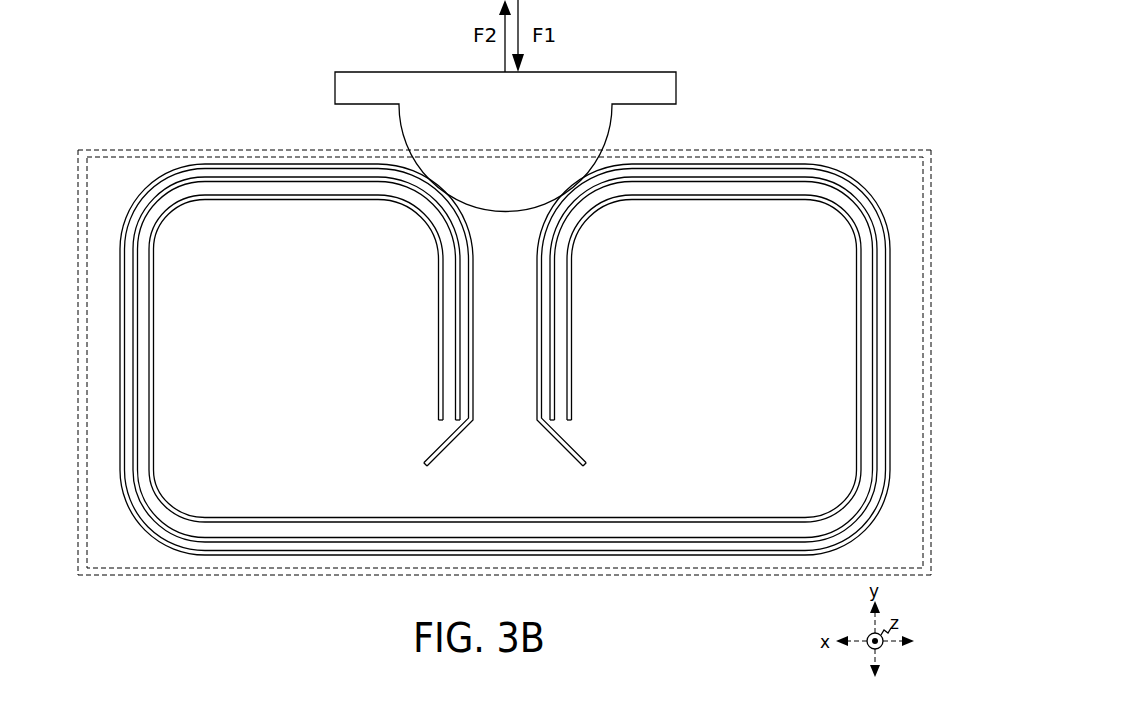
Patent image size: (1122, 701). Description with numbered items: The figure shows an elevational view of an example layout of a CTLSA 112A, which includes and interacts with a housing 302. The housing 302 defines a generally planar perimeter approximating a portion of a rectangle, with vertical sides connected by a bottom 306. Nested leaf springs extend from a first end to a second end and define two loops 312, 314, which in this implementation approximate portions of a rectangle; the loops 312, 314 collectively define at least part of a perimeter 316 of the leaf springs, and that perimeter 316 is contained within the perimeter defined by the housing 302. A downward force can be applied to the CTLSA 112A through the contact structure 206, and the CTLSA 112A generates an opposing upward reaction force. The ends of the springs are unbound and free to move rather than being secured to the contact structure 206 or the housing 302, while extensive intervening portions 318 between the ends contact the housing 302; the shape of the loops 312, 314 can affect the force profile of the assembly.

The contact structure 206 is at (603, 72).
The CTLSA 112A is at (711, 156).
The housing 302 is at (772, 585).
The bottom 306 is at (338, 577).
The perimeter 316 is at (160, 544).
The intervening portions 318 is at (215, 316).
The loop 312 is at (335, 386).
The loop 314 is at (765, 366).